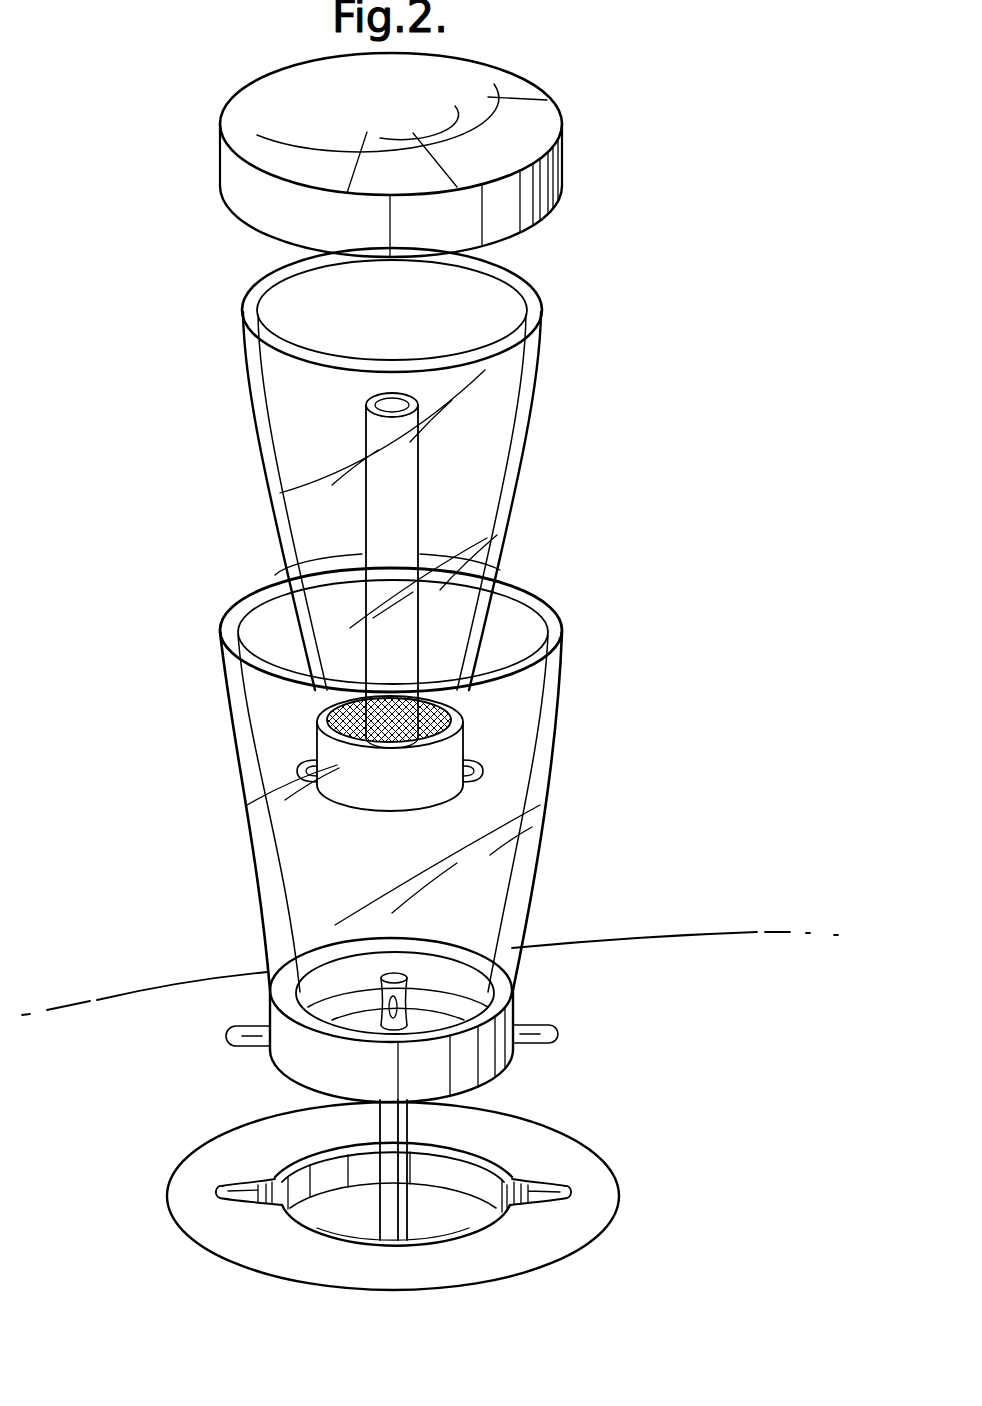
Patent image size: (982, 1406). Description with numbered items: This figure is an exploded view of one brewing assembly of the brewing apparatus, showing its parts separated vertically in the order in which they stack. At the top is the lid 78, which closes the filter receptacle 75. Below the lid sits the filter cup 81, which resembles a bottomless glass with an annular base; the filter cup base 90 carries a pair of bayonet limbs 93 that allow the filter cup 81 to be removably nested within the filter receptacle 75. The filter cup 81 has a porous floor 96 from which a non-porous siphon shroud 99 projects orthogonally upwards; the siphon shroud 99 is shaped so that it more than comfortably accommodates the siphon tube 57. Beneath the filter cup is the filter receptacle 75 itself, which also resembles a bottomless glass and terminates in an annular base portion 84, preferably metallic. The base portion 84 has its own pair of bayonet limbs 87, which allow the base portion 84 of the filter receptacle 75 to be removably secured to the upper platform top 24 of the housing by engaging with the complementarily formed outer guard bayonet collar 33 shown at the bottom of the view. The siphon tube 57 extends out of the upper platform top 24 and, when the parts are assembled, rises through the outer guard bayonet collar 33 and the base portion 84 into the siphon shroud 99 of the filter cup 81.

The upper platform top 24 is at (637, 972).
The outer guard bayonet collar 33 is at (250, 1240).
The siphon tube 57 is at (390, 1120).
The filter receptacle 75 is at (455, 893).
The lid 78 is at (535, 183).
The filter cup 81 is at (270, 382).
The base portion 84 is at (470, 1062).
The bayonet limbs 87 is at (548, 1027).
The filter cup base 90 is at (300, 764).
The bayonet limbs 93 is at (485, 764).
The porous floor 96 is at (455, 716).
The siphon shroud 99 is at (397, 524).